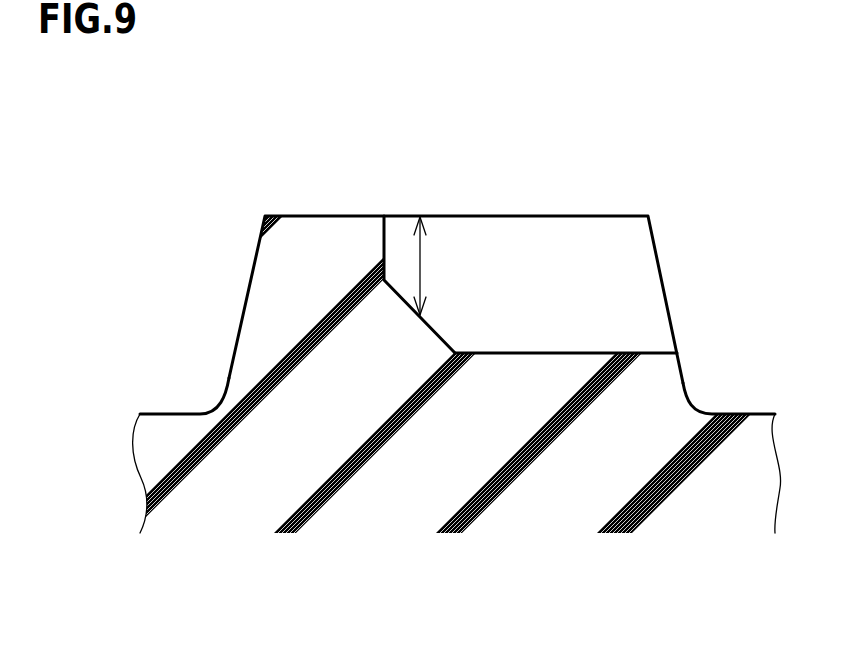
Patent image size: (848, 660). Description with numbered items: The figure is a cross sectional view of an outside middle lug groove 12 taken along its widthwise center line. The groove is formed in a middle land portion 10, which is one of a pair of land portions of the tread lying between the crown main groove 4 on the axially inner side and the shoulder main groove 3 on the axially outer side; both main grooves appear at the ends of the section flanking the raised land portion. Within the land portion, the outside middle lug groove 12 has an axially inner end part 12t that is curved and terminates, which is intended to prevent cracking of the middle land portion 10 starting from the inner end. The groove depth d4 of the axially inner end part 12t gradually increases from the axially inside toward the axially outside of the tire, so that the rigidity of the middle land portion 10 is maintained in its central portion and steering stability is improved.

The middle land portion 10 is at (332, 214).
The outside middle lug groove 12 is at (540, 300).
The axially inner end part 12t is at (437, 327).
The groove depth d4 is at (420, 267).
The crown main groove 4 is at (182, 407).
The shoulder main groove 3 is at (730, 413).